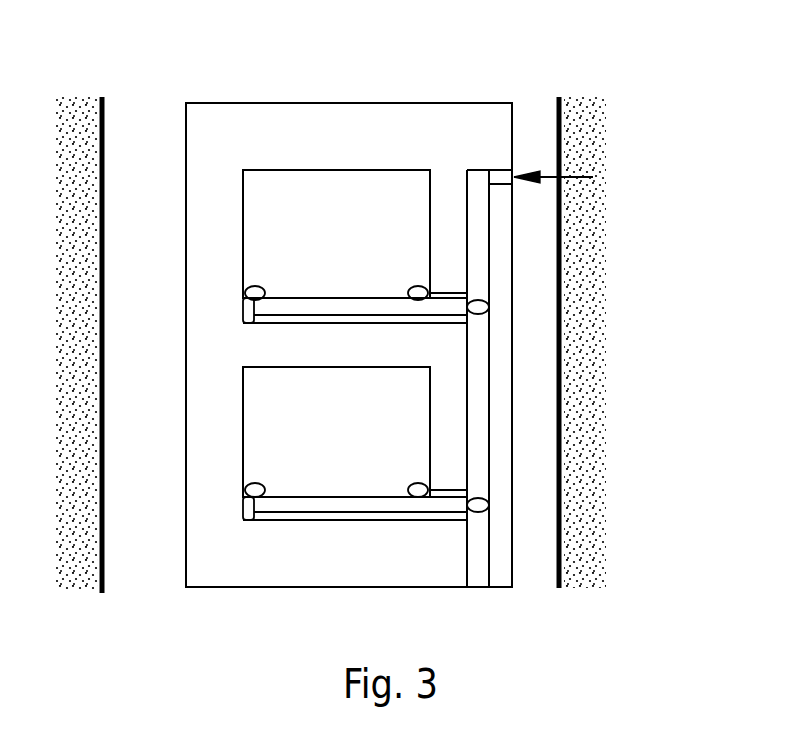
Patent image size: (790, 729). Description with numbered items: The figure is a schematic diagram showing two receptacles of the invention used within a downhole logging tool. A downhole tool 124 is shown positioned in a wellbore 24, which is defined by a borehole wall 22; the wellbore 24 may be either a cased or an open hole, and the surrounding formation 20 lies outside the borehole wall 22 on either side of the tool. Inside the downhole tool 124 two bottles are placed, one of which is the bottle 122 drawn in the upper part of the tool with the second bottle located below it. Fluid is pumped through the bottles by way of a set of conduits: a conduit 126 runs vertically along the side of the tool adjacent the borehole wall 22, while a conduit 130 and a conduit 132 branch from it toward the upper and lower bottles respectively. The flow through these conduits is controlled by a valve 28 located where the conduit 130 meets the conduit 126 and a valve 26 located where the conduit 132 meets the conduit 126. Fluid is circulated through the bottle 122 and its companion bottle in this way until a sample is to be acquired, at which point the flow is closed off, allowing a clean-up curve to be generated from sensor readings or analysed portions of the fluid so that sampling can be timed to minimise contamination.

The wall 20 is at (97, 231).
The borehole wall 22 is at (104, 342).
The wellbore 24 is at (161, 216).
The valve 26 is at (479, 499).
The valve 28 is at (482, 296).
The bottle 122 is at (318, 262).
The downhole tool 124 is at (330, 454).
The conduit 126 is at (482, 394).
The conduit 130 is at (423, 325).
The conduit 132 is at (378, 518).